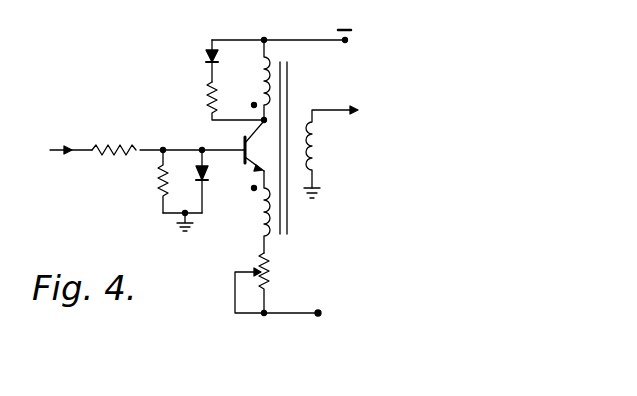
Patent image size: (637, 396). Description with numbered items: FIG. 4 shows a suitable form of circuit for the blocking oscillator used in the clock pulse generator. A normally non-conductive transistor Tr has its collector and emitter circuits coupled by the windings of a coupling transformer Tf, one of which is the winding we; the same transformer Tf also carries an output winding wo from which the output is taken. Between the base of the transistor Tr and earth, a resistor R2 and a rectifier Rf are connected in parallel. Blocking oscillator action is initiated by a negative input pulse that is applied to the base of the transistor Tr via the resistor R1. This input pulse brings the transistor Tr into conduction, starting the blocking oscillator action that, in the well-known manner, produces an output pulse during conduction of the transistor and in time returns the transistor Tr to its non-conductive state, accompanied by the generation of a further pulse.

The resistor R1 is at (114, 140).
The resistor R2 is at (148, 181).
The rectifier Rf is at (210, 178).
The transistor Tr is at (238, 140).
The winding we is at (287, 84).
The output winding wo is at (318, 156).
The coupling transformer Tf is at (285, 240).